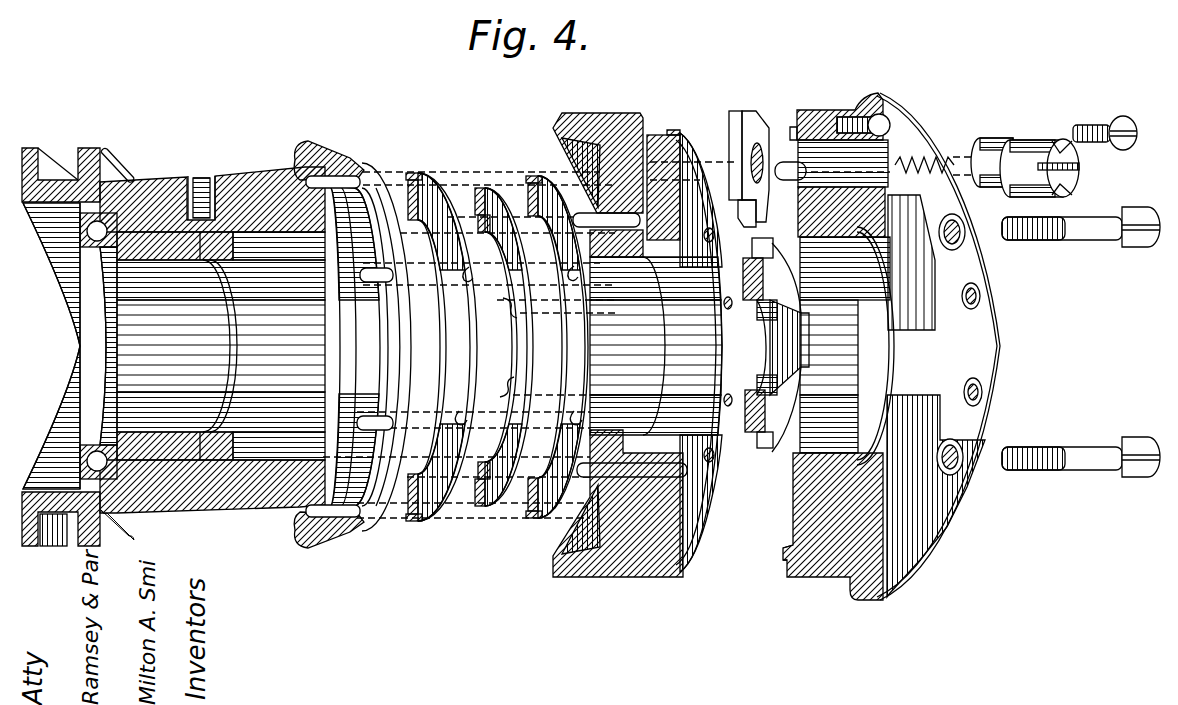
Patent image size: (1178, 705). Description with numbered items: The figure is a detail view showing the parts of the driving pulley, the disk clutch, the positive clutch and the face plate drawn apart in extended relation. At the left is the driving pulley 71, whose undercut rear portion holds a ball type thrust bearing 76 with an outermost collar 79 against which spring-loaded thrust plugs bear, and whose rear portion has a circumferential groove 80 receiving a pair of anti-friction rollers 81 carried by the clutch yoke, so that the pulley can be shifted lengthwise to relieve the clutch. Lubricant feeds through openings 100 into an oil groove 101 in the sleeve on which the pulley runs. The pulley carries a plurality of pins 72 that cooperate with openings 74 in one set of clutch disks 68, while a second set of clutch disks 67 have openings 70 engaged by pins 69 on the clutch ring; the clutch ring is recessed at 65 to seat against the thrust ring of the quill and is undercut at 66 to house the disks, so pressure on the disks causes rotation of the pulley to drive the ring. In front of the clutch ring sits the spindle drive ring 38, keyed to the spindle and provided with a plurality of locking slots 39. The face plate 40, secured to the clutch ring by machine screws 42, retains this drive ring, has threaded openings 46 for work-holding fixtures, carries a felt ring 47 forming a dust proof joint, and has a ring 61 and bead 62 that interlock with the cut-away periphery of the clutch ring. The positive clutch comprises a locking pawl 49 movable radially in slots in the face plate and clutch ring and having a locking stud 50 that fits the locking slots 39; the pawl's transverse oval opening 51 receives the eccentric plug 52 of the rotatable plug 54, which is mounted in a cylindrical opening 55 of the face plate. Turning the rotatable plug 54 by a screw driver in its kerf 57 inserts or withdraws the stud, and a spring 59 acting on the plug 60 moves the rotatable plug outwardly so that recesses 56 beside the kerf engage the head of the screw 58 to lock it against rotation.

The spindle drive ring 38 is at (790, 392).
The locking slots 39 is at (767, 448).
The face plate 40 is at (973, 267).
The machine screws 42 is at (1093, 240).
The threaded openings 46 is at (980, 307).
The felt ring 47 is at (607, 120).
The locking pawl 49 is at (753, 120).
The locking stud 50 is at (735, 212).
The transverse oval opening 51 is at (748, 155).
The eccentric plug 52 is at (987, 143).
The rotatable plug 54 is at (1033, 147).
The cylindrical opening 55 is at (830, 165).
The recesses 56 is at (1058, 140).
The kerf 57 is at (1080, 167).
The screw 58 is at (1123, 118).
The spring 59 is at (920, 157).
The plug 60 is at (785, 140).
The ring 61 is at (787, 574).
The bead 62 is at (786, 551).
The recess 65 is at (580, 520).
The undercut 66 is at (668, 552).
The clutch disks 67 is at (427, 173).
The clutch disks 68 is at (519, 186).
The pins 69 is at (583, 213).
The openings 70 is at (460, 412).
The driving pulley 71 is at (253, 500).
The pins 72 is at (343, 160).
The openings 74 is at (516, 316).
The thrust bearing 76 is at (103, 347).
The outermost collar 79 is at (85, 237).
The circumferential groove 80 is at (108, 190).
The anti-friction rollers 81 is at (88, 262).
The openings 100 is at (207, 183).
The oil groove 101 is at (203, 288).